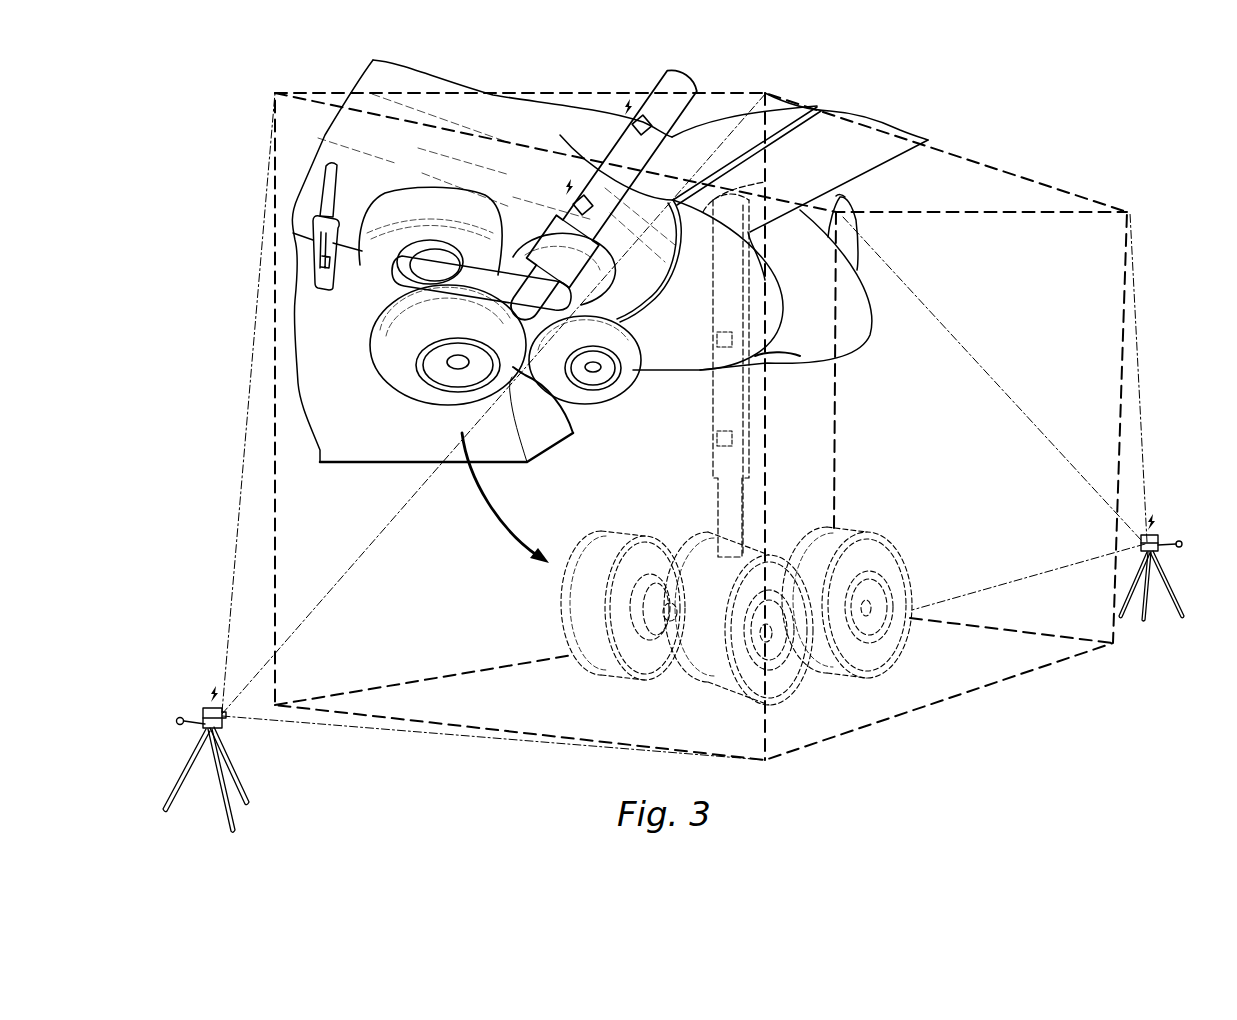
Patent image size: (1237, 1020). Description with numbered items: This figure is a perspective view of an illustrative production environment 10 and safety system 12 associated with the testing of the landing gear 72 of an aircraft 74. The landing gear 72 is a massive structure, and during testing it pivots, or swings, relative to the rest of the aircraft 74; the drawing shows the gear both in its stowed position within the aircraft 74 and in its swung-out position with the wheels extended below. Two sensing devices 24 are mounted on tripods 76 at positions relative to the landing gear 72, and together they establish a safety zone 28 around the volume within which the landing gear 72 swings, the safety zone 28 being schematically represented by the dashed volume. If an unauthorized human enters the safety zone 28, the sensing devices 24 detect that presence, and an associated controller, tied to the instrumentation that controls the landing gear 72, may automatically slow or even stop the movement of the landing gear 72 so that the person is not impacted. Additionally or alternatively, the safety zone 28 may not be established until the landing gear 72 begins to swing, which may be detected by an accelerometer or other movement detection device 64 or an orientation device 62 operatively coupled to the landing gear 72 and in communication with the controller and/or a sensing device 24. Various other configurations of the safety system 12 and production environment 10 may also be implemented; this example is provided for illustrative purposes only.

The production environment 10 is at (1114, 107).
The safety system 12 is at (1041, 122).
The sensing device 24 is at (204, 710).
The safety zone 28 is at (1133, 318).
The orientation device 62 is at (713, 100).
The movement detection device 64 is at (590, 195).
The landing gear 72 is at (611, 133).
The aircraft 74 is at (873, 234).
The tripod 76 is at (241, 776).